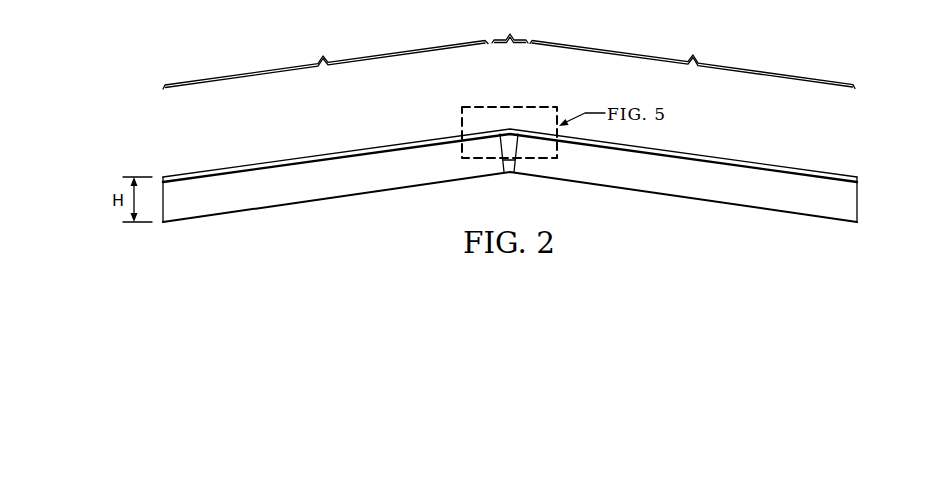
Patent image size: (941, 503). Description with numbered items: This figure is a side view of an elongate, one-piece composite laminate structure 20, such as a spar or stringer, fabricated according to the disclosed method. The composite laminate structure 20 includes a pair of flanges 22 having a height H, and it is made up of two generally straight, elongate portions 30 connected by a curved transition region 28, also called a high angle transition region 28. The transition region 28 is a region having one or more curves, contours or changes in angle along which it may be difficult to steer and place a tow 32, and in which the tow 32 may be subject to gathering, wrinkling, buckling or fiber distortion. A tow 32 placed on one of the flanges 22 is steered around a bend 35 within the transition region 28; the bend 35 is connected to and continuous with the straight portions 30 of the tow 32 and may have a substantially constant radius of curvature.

The composite laminate structure 20 is at (510, 160).
The flanges 22 is at (733, 195).
The curved transition region 28 is at (510, 25).
The straight elongate portions 30 is at (509, 62).
The tow 32 is at (330, 158).
The bend 35 is at (516, 118).